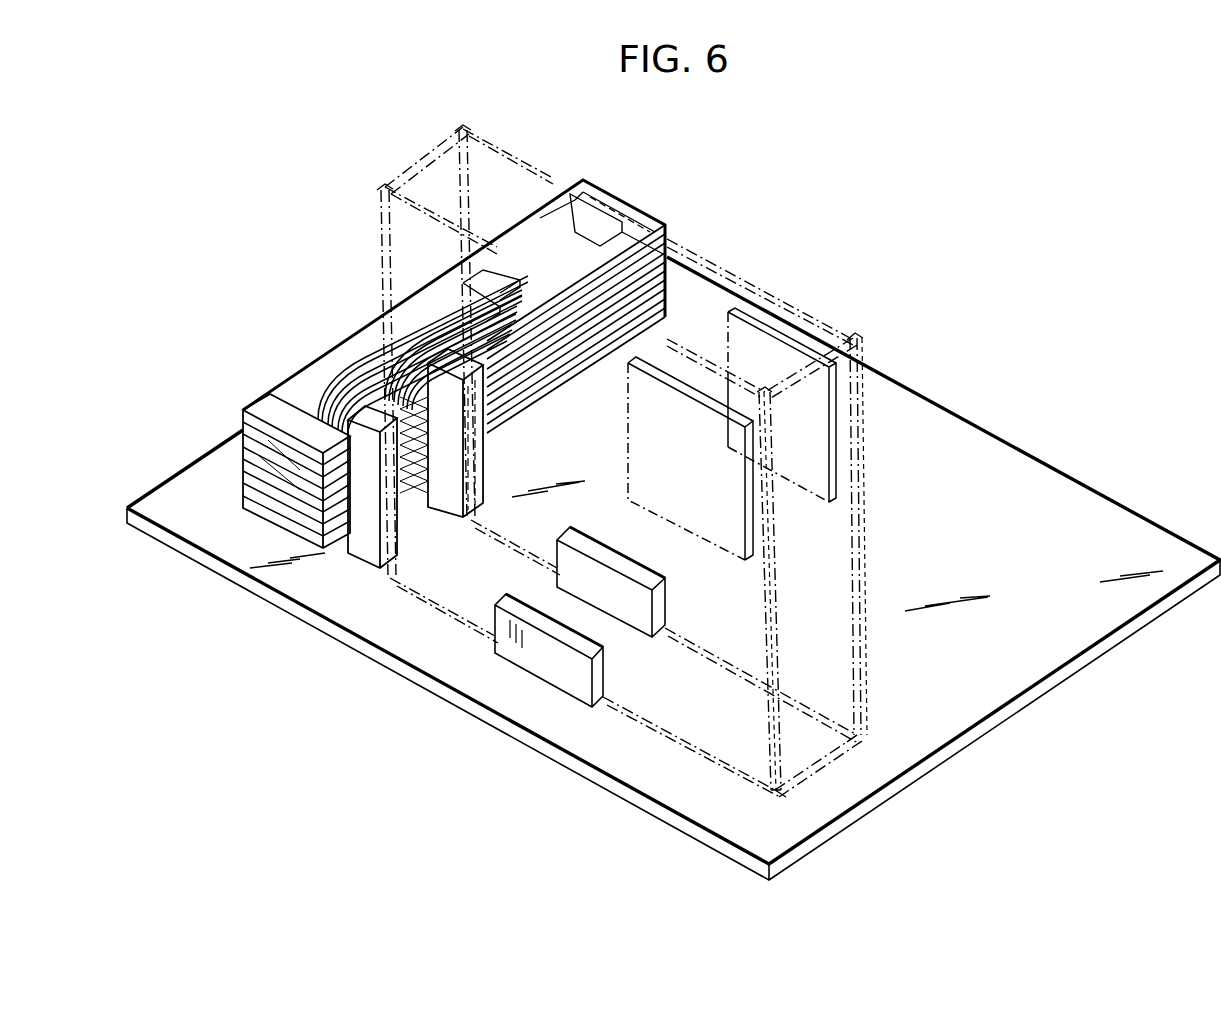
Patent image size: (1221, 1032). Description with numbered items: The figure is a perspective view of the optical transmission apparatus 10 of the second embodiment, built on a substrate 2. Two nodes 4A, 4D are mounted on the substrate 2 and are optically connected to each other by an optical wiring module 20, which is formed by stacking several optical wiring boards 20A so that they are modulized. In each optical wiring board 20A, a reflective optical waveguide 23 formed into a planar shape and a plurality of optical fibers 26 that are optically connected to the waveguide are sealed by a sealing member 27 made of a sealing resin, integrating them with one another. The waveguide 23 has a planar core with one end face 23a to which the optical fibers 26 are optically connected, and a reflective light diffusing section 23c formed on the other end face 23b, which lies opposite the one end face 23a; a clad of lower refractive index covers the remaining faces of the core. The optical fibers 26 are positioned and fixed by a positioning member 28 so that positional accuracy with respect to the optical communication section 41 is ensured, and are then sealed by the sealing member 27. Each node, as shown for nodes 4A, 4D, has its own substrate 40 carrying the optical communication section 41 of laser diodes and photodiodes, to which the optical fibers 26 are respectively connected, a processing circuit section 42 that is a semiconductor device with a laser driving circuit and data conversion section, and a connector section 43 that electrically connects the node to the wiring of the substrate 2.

The substrate 2 is at (930, 438).
The optical transmission apparatus 10 is at (1046, 440).
The optical wiring module 20 is at (240, 413).
The optical wiring board 20A is at (243, 446).
The reflective optical waveguide 23 is at (471, 262).
The one end face 23a is at (497, 300).
The other end face 23b is at (578, 223).
The reflective light diffusing section 23c is at (633, 233).
The optical fiber 26 is at (320, 418).
The sealing member 27 is at (277, 435).
The positioning member 28 is at (660, 225).
The node 4A is at (372, 189).
The node 4D is at (453, 129).
The substrate 40 is at (867, 653).
The optical communication section 41 is at (362, 542).
The processing circuit section 42 is at (668, 413).
The connector section 43 is at (560, 670).